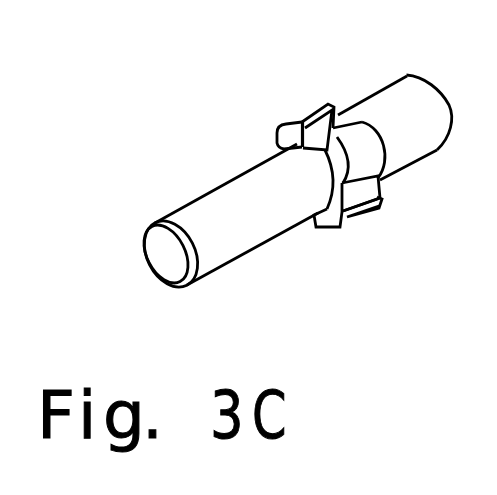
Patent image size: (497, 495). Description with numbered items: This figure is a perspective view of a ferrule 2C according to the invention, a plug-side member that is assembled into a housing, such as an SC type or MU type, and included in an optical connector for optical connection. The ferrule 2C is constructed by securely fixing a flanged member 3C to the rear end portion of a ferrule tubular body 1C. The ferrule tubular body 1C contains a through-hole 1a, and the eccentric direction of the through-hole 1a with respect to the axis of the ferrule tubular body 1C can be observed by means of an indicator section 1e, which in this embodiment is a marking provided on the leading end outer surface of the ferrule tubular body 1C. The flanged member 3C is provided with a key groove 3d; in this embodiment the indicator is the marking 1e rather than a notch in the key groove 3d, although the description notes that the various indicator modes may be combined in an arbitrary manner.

The ferrule 2C is at (233, 134).
The ferrule tubular body 1C is at (287, 208).
The through-hole 1a is at (166, 260).
The indicator section 1e is at (180, 207).
The flanged member 3C is at (413, 143).
The key groove 3d is at (334, 122).